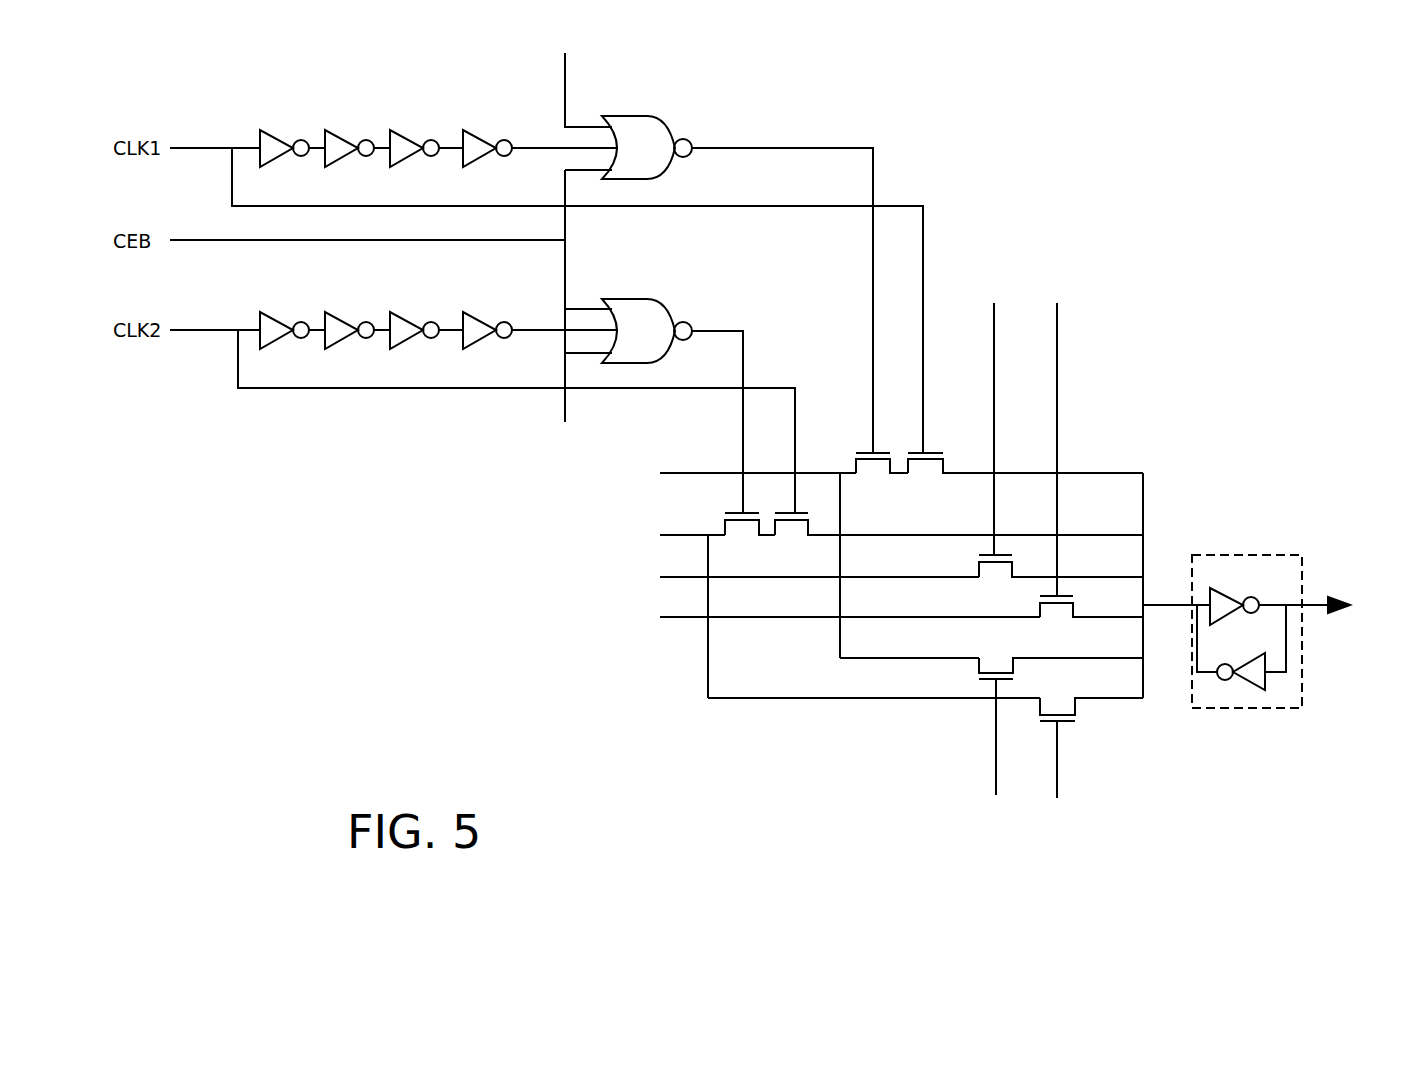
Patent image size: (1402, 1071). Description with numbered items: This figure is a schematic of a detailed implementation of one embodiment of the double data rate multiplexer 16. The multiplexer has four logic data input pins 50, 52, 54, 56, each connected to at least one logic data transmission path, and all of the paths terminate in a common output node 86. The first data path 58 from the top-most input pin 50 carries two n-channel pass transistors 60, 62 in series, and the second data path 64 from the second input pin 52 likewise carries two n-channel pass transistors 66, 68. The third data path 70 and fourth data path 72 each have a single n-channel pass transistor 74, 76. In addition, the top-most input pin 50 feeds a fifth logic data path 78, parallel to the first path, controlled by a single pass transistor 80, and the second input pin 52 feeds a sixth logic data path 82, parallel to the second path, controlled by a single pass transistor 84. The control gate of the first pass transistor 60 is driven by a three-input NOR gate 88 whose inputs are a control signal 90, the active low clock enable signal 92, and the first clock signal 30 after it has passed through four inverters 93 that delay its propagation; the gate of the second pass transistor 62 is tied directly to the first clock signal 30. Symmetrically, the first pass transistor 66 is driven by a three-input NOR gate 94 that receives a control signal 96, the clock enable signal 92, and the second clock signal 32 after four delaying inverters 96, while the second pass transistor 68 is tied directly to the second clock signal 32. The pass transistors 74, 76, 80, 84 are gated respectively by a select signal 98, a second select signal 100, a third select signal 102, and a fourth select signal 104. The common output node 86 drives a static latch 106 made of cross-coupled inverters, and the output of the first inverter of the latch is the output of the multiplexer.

The double data rate multiplexer 16 is at (370, 550).
The first clock signal 30 is at (240, 134).
The second clock signal 32 is at (240, 316).
The active low clock enable signal 92 is at (367, 226).
The four inverters 93 is at (513, 119).
The control signal / four inverters 96 is at (513, 301).
The control signal 90 is at (581, 77).
The three-input NOR gate 88 is at (737, 284).
The three-input NOR gate 94 is at (672, 406).
The logic data input pin 50 is at (743, 474).
The logic data input pin 52 is at (677, 536).
The logic data input pin 54 is at (804, 578).
The logic data input pin 56 is at (835, 618).
The first data path 58 is at (750, 461).
The second data path 64 is at (684, 523).
The third data path 70 is at (909, 565).
The fourth data path 72 is at (940, 605).
The fifth logic data path 78 is at (909, 646).
The sixth logic data path 82 is at (874, 686).
The first pass transistor 60 is at (882, 470).
The second pass transistor 62 is at (1025, 470).
The first pass transistor 66 is at (750, 531).
The second pass transistor 68 is at (959, 531).
The pass transistor 74 is at (1061, 575).
The pass transistor 76 is at (1091, 615).
The pass transistor 80 is at (1061, 664).
The pass transistor 84 is at (1091, 705).
The common output node 86 is at (1176, 592).
The select signal 98 is at (994, 419).
The second select signal 100 is at (1063, 440).
The third select signal 102 is at (1001, 756).
The fourth select signal 104 is at (1066, 781).
The static latch 106 is at (1271, 631).